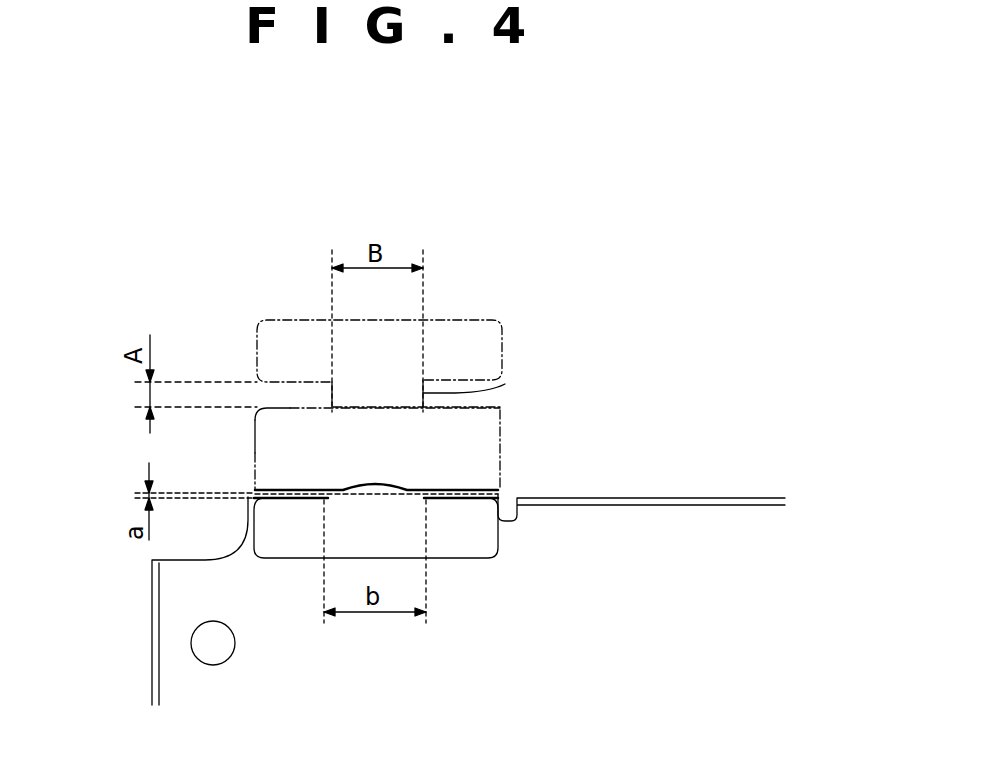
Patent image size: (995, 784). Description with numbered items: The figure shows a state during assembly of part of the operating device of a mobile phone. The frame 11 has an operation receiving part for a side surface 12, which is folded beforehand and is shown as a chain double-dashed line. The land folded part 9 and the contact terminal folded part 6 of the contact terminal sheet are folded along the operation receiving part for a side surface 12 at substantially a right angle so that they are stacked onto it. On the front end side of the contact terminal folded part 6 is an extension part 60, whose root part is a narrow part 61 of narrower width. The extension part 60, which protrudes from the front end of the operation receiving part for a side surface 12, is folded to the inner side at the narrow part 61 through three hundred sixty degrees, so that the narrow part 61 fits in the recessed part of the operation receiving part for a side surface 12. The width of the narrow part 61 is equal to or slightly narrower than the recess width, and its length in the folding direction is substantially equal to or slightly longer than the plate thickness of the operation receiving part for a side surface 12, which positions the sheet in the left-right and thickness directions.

The extension part 60 is at (503, 322).
The narrow part 61 is at (505, 384).
The contact terminal folded part 6 is at (254, 433).
The land folded part 9 is at (485, 440).
The operation receiving part for a side surface 12 is at (500, 493).
The frame 11 is at (177, 682).